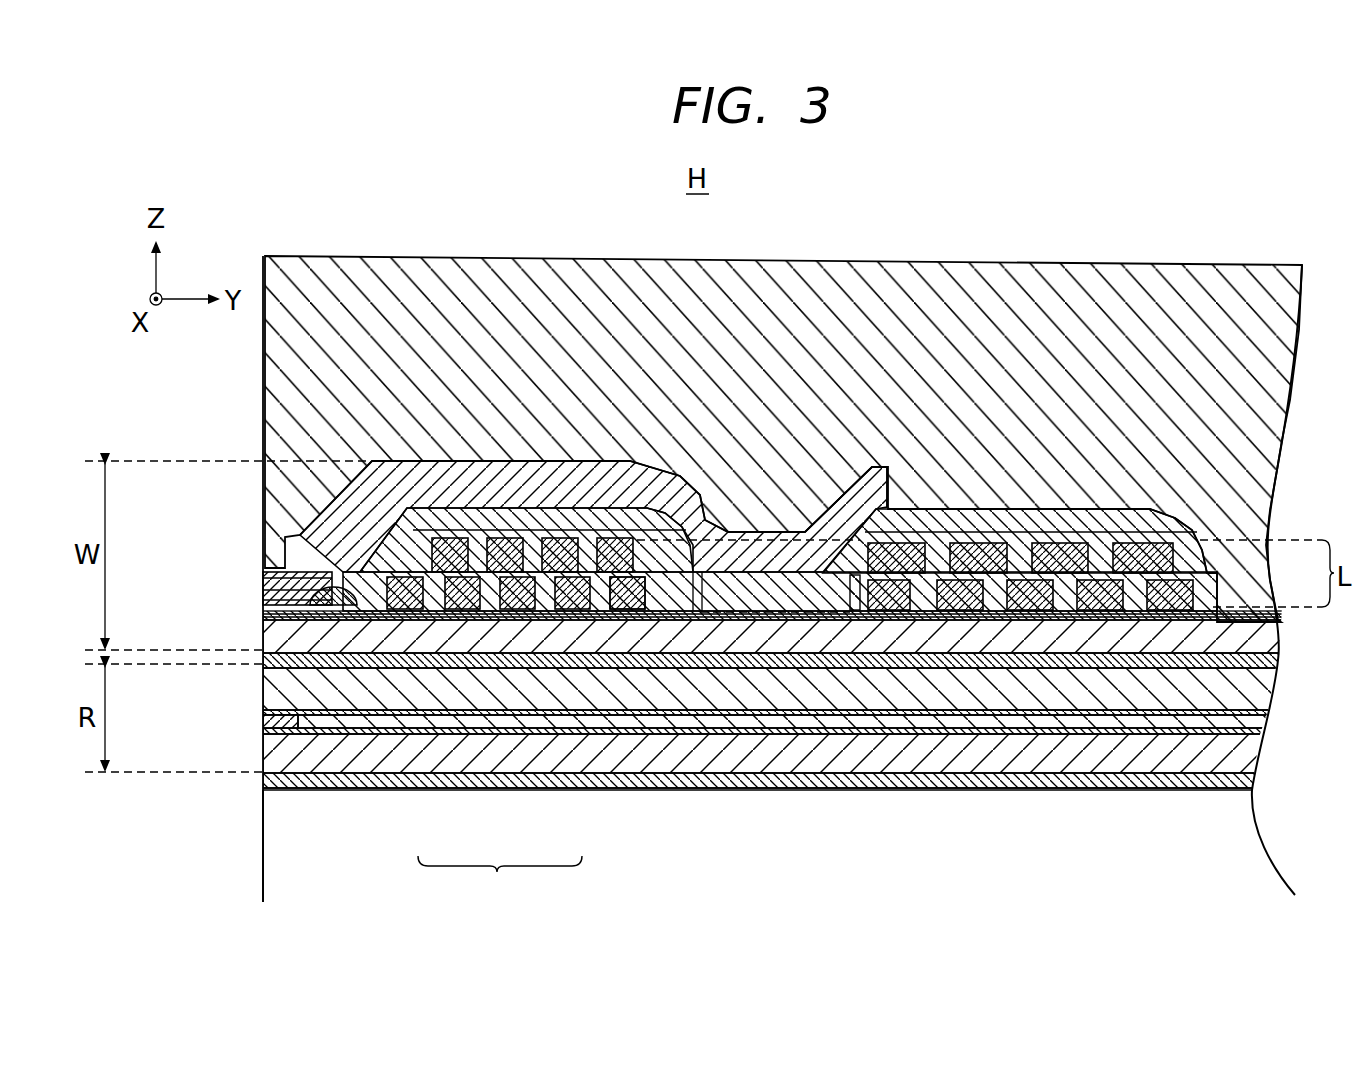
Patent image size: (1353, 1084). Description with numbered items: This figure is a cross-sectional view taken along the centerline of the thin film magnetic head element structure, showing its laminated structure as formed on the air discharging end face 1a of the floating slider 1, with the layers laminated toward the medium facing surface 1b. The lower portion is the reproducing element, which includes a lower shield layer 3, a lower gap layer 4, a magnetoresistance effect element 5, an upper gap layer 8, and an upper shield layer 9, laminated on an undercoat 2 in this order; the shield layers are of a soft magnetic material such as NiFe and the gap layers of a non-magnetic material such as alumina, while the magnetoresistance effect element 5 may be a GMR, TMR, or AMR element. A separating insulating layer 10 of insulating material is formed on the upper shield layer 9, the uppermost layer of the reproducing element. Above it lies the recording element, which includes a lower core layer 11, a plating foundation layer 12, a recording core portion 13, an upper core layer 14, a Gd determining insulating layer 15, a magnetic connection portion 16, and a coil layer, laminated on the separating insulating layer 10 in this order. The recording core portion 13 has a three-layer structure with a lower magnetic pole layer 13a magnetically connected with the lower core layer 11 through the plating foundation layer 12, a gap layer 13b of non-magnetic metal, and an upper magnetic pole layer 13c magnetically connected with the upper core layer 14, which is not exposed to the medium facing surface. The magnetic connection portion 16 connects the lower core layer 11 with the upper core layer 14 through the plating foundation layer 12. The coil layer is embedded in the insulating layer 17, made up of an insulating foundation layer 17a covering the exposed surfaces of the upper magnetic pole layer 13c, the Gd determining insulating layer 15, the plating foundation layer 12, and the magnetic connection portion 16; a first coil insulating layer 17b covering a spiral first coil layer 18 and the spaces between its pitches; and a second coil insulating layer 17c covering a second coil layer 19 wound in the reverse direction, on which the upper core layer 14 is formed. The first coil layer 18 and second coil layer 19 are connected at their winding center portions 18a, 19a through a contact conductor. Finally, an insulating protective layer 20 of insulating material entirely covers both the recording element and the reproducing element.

The floating slider 1 is at (272, 849).
The air discharging end face 1a is at (308, 789).
The medium facing surface 1b is at (262, 890).
The undercoat 2 is at (263, 790).
The lower shield layer 3 is at (263, 778).
The lower gap layer 4 is at (263, 751).
The magnetoresistance effect element 5 is at (263, 730).
The upper gap layer 8 is at (263, 719).
The upper shield layer 9 is at (263, 687).
The separating insulating layer 10 is at (263, 667).
The lower core layer 11 is at (263, 632).
The plating foundation layer 12 is at (263, 613).
The recording core portion 13 is at (172, 592).
The lower magnetic pole layer 13a is at (263, 603).
The gap layer 13b is at (263, 590).
The upper magnetic pole layer 13c is at (263, 578).
The upper core layer 14 is at (263, 512).
The Gd determining insulating layer 15 is at (370, 606).
The magnetic connection portion 16 is at (745, 597).
The insulating layer 17 is at (500, 879).
The insulating foundation layer 17a is at (432, 605).
The first coil insulating layer 17b is at (505, 572).
The second coil insulating layer 17c is at (1137, 520).
The first coil layer 18 is at (600, 600).
The winding center portion 18a is at (872, 606).
The second coil layer 19 is at (532, 530).
The winding center portion 19a is at (907, 470).
The insulating protective layer 20 is at (868, 292).